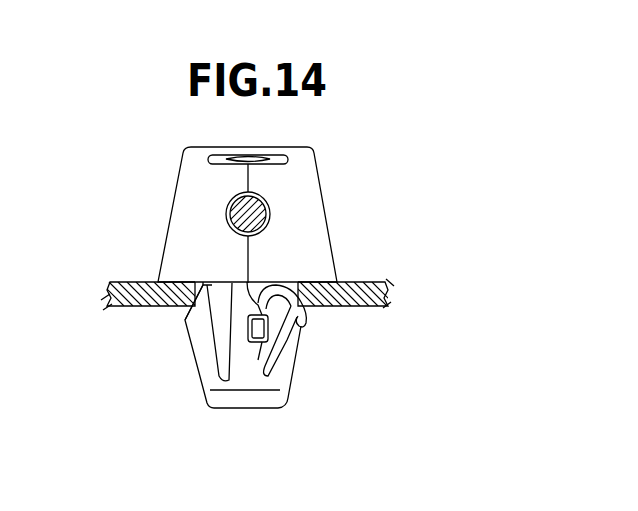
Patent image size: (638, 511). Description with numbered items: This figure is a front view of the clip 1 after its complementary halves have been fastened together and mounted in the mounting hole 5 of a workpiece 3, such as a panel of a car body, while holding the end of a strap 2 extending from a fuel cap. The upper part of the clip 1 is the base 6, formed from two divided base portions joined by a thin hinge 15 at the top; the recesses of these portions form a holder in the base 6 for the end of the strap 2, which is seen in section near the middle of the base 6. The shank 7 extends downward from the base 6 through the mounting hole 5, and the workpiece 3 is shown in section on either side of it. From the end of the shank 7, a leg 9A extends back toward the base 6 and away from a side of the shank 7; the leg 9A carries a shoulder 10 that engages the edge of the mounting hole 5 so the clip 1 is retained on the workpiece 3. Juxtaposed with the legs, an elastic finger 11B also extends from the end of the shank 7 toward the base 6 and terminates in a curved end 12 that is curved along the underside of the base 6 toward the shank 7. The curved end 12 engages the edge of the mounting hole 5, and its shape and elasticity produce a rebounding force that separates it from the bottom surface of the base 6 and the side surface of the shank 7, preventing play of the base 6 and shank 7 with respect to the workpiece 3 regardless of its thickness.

The clip 1 is at (259, 290).
The strap 2 is at (233, 198).
The workpiece 3 is at (122, 281).
The mounting hole 5 is at (202, 273).
The base 6 is at (330, 232).
The shank 7 is at (249, 350).
The leg 9A is at (195, 352).
The shoulder 10 is at (187, 311).
The elastic finger 11B is at (293, 358).
The curved end 12 is at (300, 326).
The thin hinge 15 is at (248, 147).